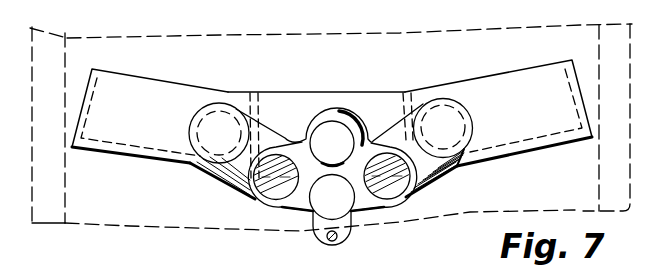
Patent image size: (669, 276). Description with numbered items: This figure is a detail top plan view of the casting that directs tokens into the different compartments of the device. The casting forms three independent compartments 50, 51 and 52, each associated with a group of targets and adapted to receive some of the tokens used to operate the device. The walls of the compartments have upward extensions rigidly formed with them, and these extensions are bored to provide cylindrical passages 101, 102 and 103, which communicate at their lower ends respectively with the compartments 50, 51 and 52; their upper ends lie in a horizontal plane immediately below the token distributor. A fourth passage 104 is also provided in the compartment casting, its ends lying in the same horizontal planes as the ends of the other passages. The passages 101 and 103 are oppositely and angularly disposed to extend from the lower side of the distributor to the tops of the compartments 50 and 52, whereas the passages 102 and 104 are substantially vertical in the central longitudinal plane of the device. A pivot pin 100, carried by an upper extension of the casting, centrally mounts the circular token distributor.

The compartment 50 is at (142, 87).
The compartment 51 is at (368, 95).
The compartment 52 is at (536, 80).
The pivot pin 100 is at (327, 241).
The cylindrical passage 101 is at (262, 201).
The cylindrical passage 102 is at (315, 127).
The cylindrical passage 103 is at (398, 196).
The fourth passage 104 is at (315, 214).